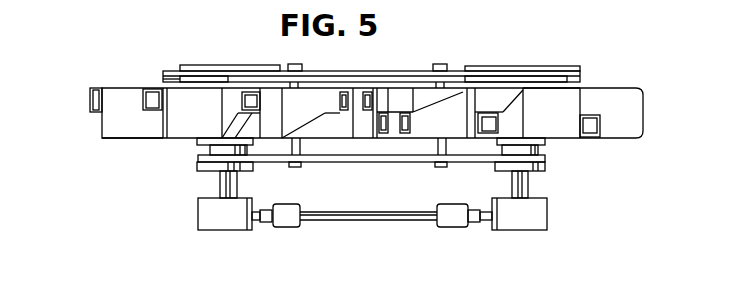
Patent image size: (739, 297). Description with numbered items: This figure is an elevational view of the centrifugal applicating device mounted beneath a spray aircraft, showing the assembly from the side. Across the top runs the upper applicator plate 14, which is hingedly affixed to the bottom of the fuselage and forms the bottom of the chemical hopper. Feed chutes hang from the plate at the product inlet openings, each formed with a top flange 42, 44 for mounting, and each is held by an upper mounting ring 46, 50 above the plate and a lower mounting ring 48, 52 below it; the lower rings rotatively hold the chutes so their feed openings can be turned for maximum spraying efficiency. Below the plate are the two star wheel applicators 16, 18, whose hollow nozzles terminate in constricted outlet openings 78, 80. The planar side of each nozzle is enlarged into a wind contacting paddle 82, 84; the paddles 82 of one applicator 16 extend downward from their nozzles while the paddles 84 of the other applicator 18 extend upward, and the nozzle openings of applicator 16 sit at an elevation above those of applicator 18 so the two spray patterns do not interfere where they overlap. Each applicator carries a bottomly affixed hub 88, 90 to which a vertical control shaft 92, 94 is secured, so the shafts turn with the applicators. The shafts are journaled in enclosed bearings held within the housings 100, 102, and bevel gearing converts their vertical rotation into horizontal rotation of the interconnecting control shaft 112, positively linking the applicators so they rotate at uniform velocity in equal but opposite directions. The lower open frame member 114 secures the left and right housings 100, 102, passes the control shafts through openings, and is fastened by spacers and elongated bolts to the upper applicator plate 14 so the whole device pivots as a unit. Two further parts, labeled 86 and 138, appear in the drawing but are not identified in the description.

The upper applicator plate 14 is at (580, 78).
The star wheel applicator 16 is at (110, 142).
The star wheel applicator 18 is at (645, 135).
The top flange 42 is at (168, 77).
The top flange 44 is at (568, 80).
The upper mounting ring 46 is at (242, 65).
The lower mounting ring 48 is at (163, 80).
The upper mounting ring 50 is at (553, 66).
The lower mounting ring 52 is at (565, 85).
The constricted outlet opening 78 is at (250, 98).
The constricted outlet opening 80 is at (488, 124).
The wind contacting paddle 82 is at (110, 122).
The wind contacting paddle 84 is at (632, 113).
The coupling 86 is at (275, 228).
The hub 88 is at (210, 150).
The hub 90 is at (538, 150).
The vertical control shaft 92 is at (223, 184).
The vertical control shaft 94 is at (528, 185).
The housing 100 is at (212, 222).
The housing 102 is at (538, 225).
The interconnecting control shaft 112 is at (407, 220).
The lower open frame member 114 is at (545, 166).
The fastener 138 is at (437, 64).